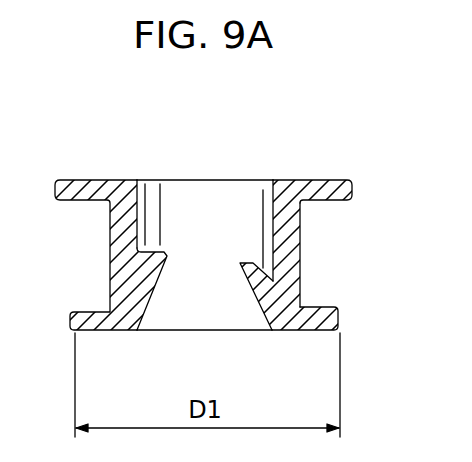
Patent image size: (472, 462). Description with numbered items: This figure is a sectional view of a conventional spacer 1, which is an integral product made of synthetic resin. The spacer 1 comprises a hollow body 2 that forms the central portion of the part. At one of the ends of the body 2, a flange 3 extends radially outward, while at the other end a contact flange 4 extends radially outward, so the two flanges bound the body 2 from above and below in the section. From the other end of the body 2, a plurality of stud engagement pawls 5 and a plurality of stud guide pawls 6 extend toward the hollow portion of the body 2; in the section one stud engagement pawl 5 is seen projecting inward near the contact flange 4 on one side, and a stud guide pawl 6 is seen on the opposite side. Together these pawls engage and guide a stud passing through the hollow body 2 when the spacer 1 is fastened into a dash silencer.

The spacer 1 is at (228, 172).
The hollow body 2 is at (287, 232).
The flange 3 is at (325, 178).
The contact flange 4 is at (328, 312).
The stud engagement pawl 5 is at (243, 266).
The stud guide pawl 6 is at (160, 265).